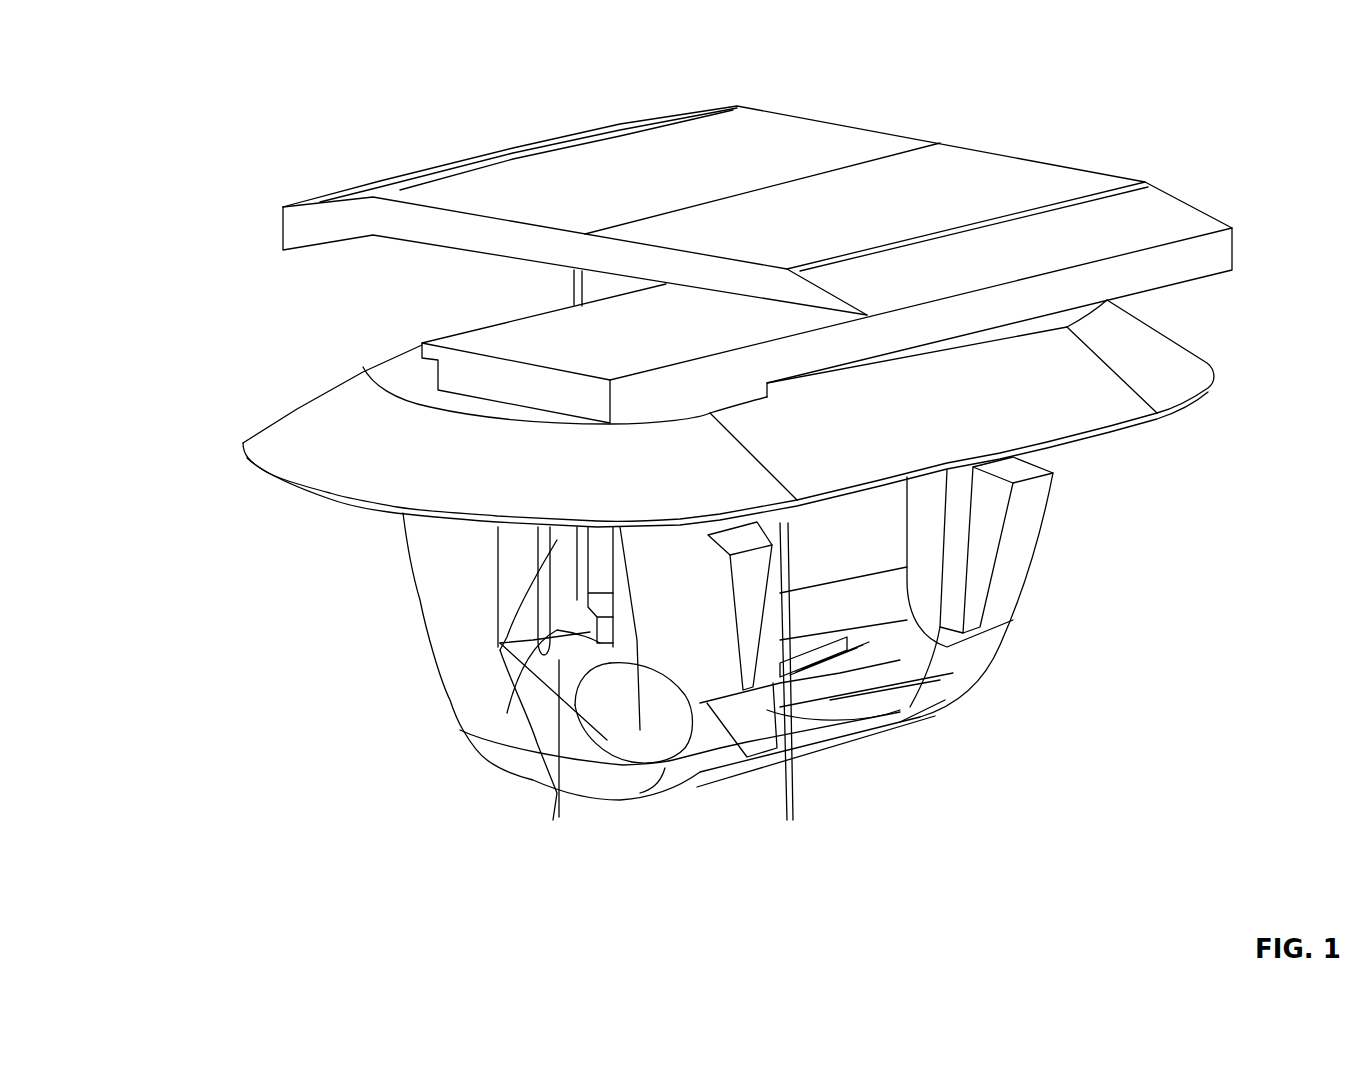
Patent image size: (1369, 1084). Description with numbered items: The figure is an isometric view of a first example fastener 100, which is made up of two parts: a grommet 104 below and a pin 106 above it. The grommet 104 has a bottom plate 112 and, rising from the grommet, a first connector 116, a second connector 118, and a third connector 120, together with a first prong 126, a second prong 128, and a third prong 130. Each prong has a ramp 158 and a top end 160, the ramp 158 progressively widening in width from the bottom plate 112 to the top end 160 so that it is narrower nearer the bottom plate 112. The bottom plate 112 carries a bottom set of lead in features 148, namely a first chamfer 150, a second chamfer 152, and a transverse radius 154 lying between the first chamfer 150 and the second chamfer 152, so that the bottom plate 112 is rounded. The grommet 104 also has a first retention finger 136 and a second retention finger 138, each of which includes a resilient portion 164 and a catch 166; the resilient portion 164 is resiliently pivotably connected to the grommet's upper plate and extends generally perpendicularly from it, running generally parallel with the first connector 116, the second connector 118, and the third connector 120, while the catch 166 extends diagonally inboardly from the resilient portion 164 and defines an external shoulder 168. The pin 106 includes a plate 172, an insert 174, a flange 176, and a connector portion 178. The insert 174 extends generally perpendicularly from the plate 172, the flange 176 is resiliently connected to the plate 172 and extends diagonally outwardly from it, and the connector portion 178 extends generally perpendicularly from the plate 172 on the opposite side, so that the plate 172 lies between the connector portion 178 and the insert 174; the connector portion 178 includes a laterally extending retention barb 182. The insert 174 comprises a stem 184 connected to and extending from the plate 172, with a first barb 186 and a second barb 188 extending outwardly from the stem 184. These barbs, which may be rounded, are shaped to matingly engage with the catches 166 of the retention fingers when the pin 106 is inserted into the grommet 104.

The fastener 100 is at (158, 78).
The grommet 104 is at (470, 690).
The pin 106 is at (522, 185).
The bottom plate 112 is at (905, 736).
The first connector 116 is at (793, 740).
The second connector 118 is at (953, 580).
The third connector 120 is at (572, 543).
The first prong 126 is at (788, 820).
The second prong 128 is at (1020, 540).
The third prong 130 is at (463, 607).
The first retention finger 136 is at (935, 642).
The second retention finger 138 is at (603, 632).
The bottom set of lead in features 148 is at (596, 781).
The first chamfer 150 is at (643, 793).
The second chamfer 152 is at (937, 707).
The transverse radius 154 is at (843, 743).
The ramp 158 is at (700, 736).
The top end 160 is at (715, 513).
The resilient portion 164 is at (603, 588).
The catch 166 is at (600, 657).
The external shoulder 168 is at (890, 703).
The plate 172 is at (405, 377).
The insert 174 is at (603, 755).
The flange 176 is at (318, 423).
The connector portion 178 is at (290, 233).
The retention barb 182 is at (527, 343).
The stem 184 is at (680, 735).
The first barb 186 is at (940, 728).
The second barb 188 is at (552, 820).